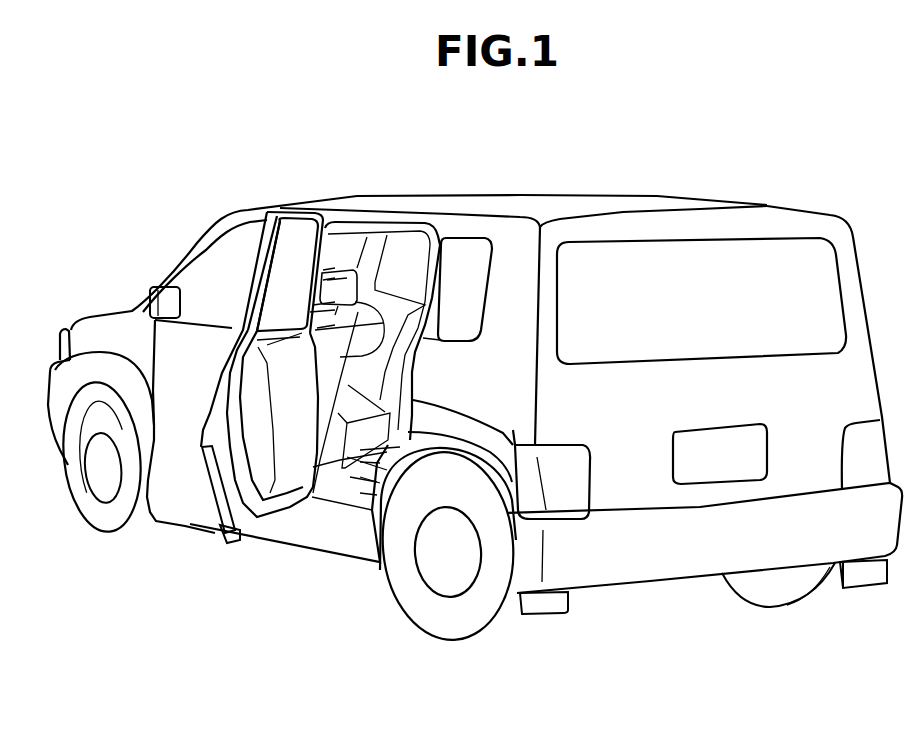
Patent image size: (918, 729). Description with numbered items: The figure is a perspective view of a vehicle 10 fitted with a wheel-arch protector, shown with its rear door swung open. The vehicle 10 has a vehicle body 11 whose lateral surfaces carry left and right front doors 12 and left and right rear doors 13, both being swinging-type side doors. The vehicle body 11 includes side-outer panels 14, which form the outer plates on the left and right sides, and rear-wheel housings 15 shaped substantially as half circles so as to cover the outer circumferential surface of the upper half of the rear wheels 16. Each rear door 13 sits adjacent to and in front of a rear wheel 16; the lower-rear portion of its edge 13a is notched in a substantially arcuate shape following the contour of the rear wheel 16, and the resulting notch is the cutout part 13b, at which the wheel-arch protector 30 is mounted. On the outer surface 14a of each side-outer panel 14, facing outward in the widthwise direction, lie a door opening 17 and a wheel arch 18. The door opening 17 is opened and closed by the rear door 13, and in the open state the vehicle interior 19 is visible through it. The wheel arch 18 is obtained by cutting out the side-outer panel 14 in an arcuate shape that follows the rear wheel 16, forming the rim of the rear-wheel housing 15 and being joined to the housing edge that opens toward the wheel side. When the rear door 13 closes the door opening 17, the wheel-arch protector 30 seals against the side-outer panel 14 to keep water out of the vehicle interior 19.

The vehicle 10 is at (150, 195).
The vehicle body 11 is at (768, 207).
The front door 12 is at (167, 440).
The rear door 13 is at (262, 522).
The edge of rear door 13a is at (210, 413).
The cutout part 13b is at (205, 470).
The side-outer panel 14 is at (466, 385).
The outer surface 14a is at (364, 546).
The rear-wheel housing 15 is at (412, 462).
The rear wheel 16 is at (483, 602).
The door opening 17 is at (355, 462).
The wheel arch 18 is at (390, 537).
The vehicle interior 19 is at (402, 382).
The wheel-arch protector 30 is at (235, 498).